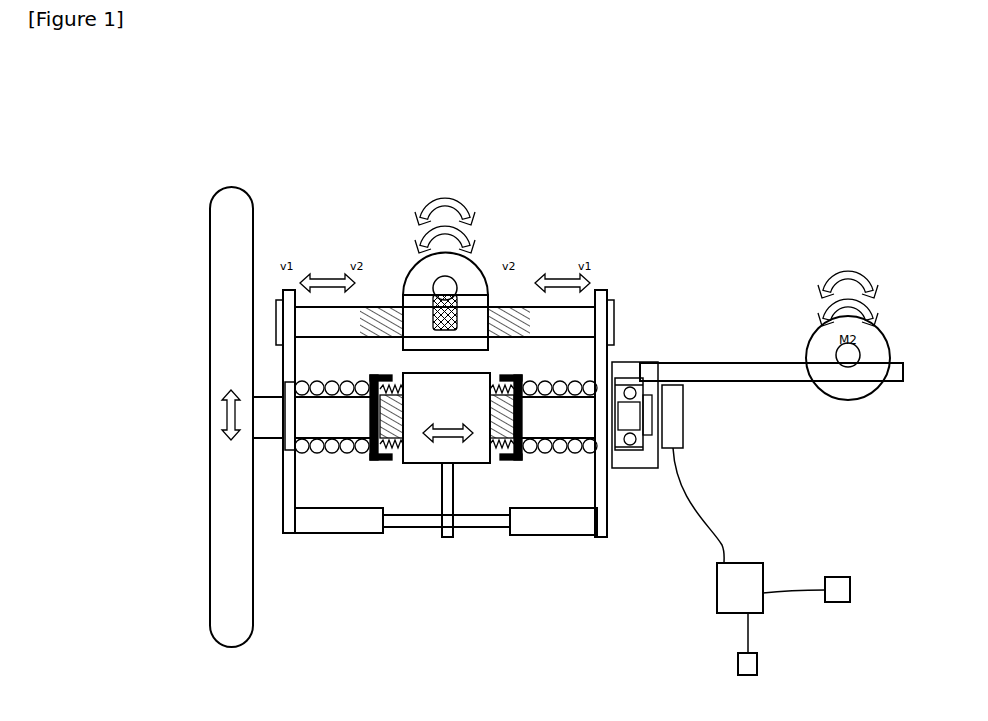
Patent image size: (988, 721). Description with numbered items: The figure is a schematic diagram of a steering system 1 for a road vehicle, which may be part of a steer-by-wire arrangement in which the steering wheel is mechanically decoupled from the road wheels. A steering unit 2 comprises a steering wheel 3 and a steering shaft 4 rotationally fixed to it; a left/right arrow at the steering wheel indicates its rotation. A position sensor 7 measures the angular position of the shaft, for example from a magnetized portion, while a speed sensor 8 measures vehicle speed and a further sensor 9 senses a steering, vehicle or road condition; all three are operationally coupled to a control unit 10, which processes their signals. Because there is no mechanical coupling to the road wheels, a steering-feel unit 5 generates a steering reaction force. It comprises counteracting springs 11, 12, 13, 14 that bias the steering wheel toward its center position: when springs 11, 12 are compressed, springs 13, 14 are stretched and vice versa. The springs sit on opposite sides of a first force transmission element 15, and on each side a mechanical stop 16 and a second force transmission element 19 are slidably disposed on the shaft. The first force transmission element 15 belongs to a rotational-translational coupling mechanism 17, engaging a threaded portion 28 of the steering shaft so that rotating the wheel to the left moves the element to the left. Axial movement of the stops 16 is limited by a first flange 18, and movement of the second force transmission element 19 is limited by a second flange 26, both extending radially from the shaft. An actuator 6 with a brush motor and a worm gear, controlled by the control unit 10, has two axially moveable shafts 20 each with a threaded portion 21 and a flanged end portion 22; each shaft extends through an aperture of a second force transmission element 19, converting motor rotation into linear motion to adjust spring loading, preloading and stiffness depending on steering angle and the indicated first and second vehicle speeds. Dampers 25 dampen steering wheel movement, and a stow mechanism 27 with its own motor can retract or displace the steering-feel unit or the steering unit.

The steering system 1 is at (318, 135).
The steering unit 2 is at (172, 511).
The steering wheel 3 is at (212, 224).
The steering shaft 4 is at (270, 440).
The steering-feel unit 5 is at (562, 188).
The actuator 6 is at (410, 265).
The position sensor 7 is at (684, 427).
The speed sensor 8 is at (757, 668).
The further sensor 9 is at (840, 577).
The control unit 10 is at (740, 563).
The spring 11 is at (493, 465).
The spring 12 is at (556, 454).
The spring 13 is at (394, 463).
The spring 14 is at (334, 454).
The first force transmission element 15 is at (443, 373).
The mechanical stop 16 is at (365, 375).
The coupling mechanism 17 is at (426, 490).
The first flange 18 is at (516, 425).
The second force transmission element 19 is at (283, 368).
The axially moveable shaft 20 is at (570, 338).
The threaded portion 21 is at (379, 307).
The flanged end portion 22 is at (607, 337).
The damper 25 is at (342, 534).
The second flange 26 is at (284, 392).
The stow mechanism 27 is at (783, 322).
The threaded portion 28 is at (389, 375).